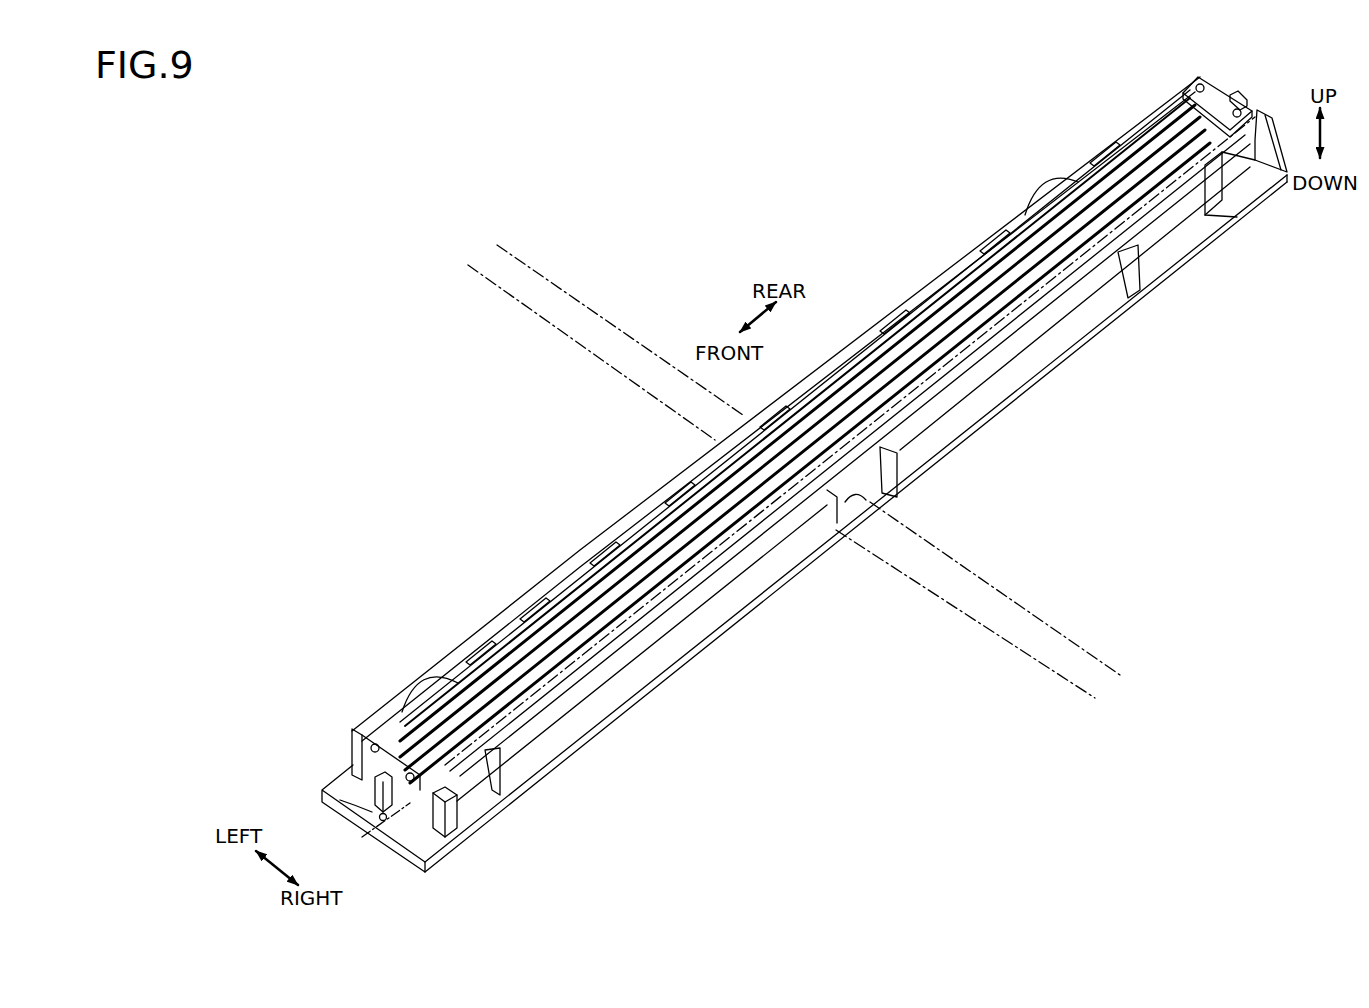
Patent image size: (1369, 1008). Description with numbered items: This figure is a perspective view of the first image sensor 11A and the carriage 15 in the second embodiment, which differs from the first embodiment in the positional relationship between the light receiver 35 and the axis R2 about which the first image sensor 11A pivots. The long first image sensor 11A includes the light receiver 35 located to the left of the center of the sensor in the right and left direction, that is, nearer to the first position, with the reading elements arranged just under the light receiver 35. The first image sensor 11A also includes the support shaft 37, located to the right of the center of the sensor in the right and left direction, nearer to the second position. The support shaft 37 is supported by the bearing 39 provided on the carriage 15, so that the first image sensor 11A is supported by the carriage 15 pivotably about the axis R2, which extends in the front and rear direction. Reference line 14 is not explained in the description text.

The first image sensor 11A is at (880, 345).
The axis line 14 is at (970, 582).
The carriage 15 is at (1010, 378).
The light receiver 35 is at (462, 688).
The support shaft 37 is at (383, 815).
The bearing 39 is at (380, 778).
The axis R2 is at (370, 837).